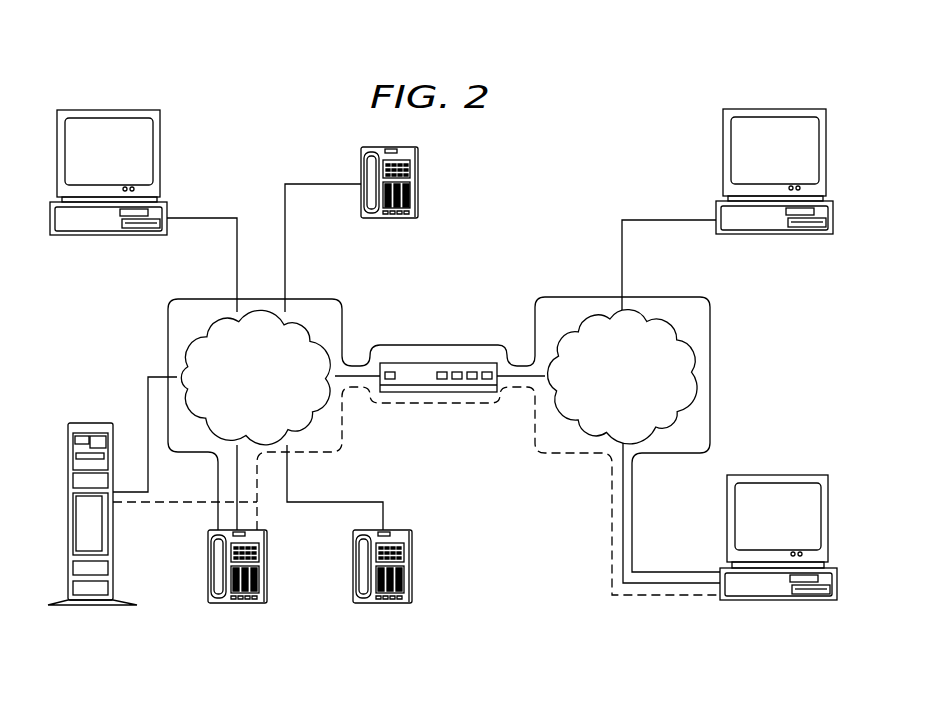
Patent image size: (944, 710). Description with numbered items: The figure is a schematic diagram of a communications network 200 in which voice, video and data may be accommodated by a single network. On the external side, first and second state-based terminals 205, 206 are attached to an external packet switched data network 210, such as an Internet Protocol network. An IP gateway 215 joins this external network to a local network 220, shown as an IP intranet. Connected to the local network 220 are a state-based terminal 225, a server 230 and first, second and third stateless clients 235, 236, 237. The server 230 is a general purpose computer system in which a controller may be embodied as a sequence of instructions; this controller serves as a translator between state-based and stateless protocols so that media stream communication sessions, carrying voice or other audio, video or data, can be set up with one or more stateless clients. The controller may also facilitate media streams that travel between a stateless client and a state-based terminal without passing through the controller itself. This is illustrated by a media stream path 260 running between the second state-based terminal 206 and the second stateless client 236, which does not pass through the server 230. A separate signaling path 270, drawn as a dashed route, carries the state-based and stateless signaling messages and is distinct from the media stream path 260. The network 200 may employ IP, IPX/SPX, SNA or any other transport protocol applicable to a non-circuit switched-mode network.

The communications network 200 is at (583, 138).
The first state-based terminal 205 is at (773, 109).
The second state-based terminal 206 is at (777, 475).
The external packet switched data network 210 is at (607, 417).
The IP gateway 215 is at (452, 393).
The local network 220 is at (240, 415).
The state-based terminal 225 is at (108, 110).
The server 230 is at (93, 423).
The first stateless client 235 is at (418, 185).
The second stateless client 236 is at (267, 568).
The third stateless client 237 is at (412, 568).
The media stream path 260 is at (680, 571).
The signaling path 270 is at (677, 597).